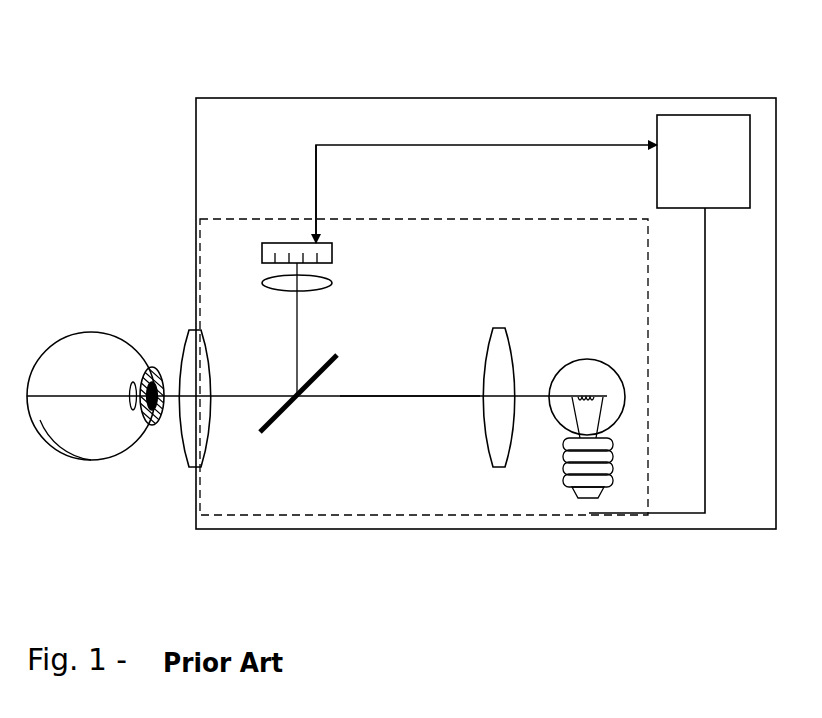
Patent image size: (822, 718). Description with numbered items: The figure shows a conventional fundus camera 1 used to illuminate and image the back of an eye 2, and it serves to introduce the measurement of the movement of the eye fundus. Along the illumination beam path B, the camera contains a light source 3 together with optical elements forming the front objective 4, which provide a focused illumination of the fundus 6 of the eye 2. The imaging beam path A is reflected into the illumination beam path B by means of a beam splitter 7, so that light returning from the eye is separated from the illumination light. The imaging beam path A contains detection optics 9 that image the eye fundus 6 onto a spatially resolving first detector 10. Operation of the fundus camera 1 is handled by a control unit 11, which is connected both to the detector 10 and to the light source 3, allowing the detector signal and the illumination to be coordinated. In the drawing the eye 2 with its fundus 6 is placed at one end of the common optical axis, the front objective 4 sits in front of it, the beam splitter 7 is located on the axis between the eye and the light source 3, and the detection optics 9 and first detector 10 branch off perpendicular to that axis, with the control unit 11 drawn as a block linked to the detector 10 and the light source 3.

The fundus camera 1 is at (196, 136).
The eye 2 is at (93, 460).
The first light source 3 is at (589, 499).
The front objective 4 is at (183, 453).
The fundus 6 is at (63, 440).
The beam splitter 7 is at (273, 425).
The detection optics 9 is at (262, 283).
The first detector 10 is at (285, 243).
The control unit 11 is at (678, 115).
The imaging beam path A is at (297, 318).
The illumination beam path B is at (348, 397).